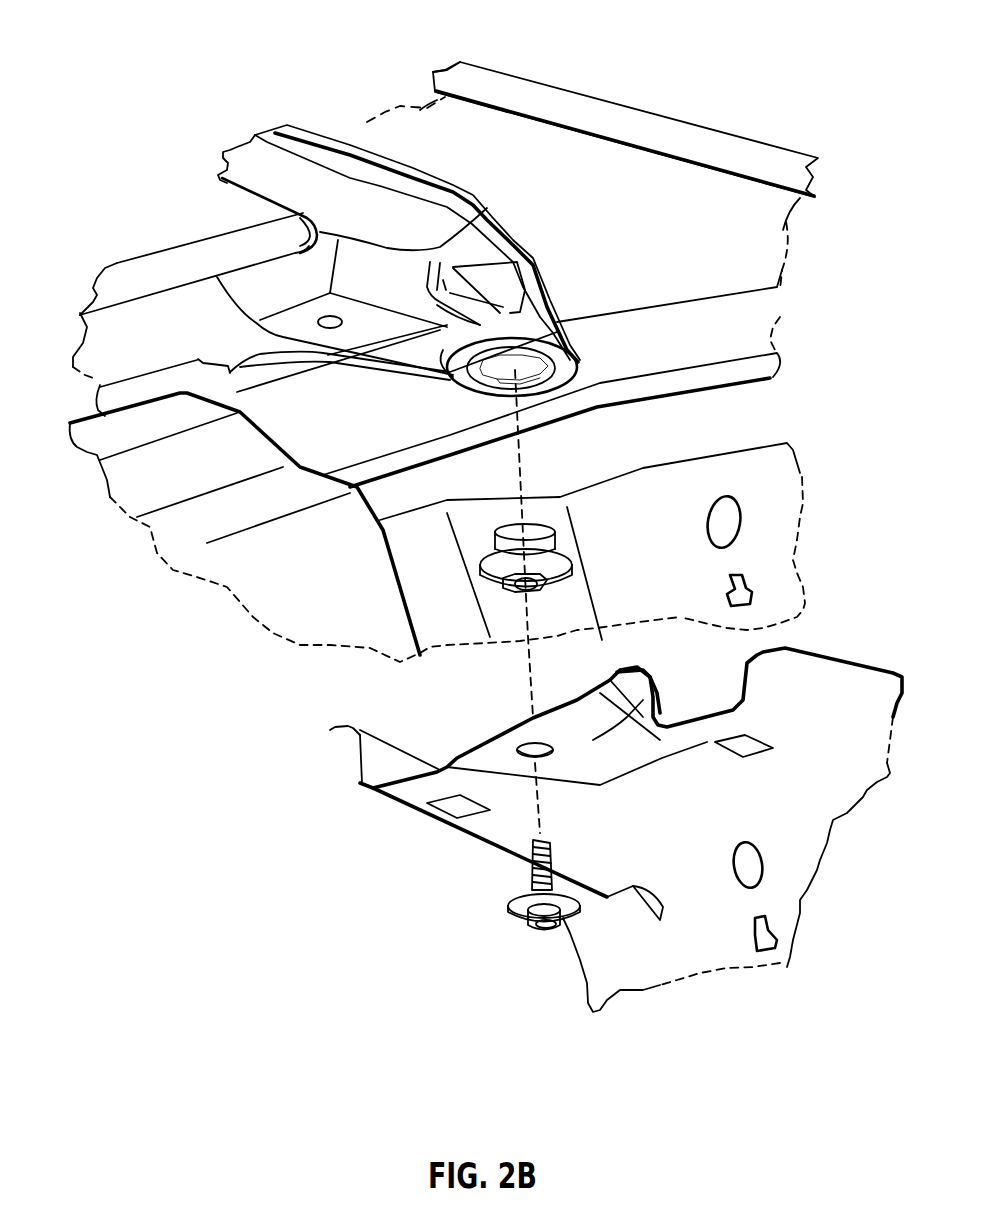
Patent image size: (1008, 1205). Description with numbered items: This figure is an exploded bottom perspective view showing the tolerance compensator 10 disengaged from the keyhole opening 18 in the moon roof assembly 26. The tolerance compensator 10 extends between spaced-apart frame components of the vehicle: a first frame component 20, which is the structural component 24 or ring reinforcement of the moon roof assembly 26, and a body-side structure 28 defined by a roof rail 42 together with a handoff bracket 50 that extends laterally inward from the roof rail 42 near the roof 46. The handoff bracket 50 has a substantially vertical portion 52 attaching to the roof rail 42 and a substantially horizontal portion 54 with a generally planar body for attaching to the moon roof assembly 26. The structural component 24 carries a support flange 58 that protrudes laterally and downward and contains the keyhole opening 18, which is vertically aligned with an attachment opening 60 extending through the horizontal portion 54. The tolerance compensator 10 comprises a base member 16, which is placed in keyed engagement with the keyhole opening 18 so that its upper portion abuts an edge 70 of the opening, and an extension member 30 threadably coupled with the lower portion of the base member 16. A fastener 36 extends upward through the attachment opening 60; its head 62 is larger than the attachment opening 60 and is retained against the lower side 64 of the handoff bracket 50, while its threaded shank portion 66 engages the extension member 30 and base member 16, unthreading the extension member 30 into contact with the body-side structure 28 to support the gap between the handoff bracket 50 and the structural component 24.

The tolerance compensator 10 is at (482, 555).
The base member 16 is at (567, 560).
The keyhole opening 18 is at (528, 370).
The first frame component 20 is at (403, 232).
The structural component 24 is at (128, 342).
The moon roof assembly 26 is at (160, 262).
The body-side structure 28 is at (705, 745).
The extension member 30 is at (545, 587).
The fastener 36 is at (548, 935).
The roof rail 42 is at (688, 483).
The roof 46 is at (477, 138).
The handoff bracket 50 is at (789, 857).
The vertical portion 52 is at (717, 942).
The horizontal portion 54 is at (645, 712).
The support flange 58 is at (507, 327).
The attachment opening 60 is at (507, 748).
The head 62 is at (517, 917).
The lower side 64 is at (493, 757).
The threaded shank portion 66 is at (523, 872).
The edge 70 is at (473, 377).